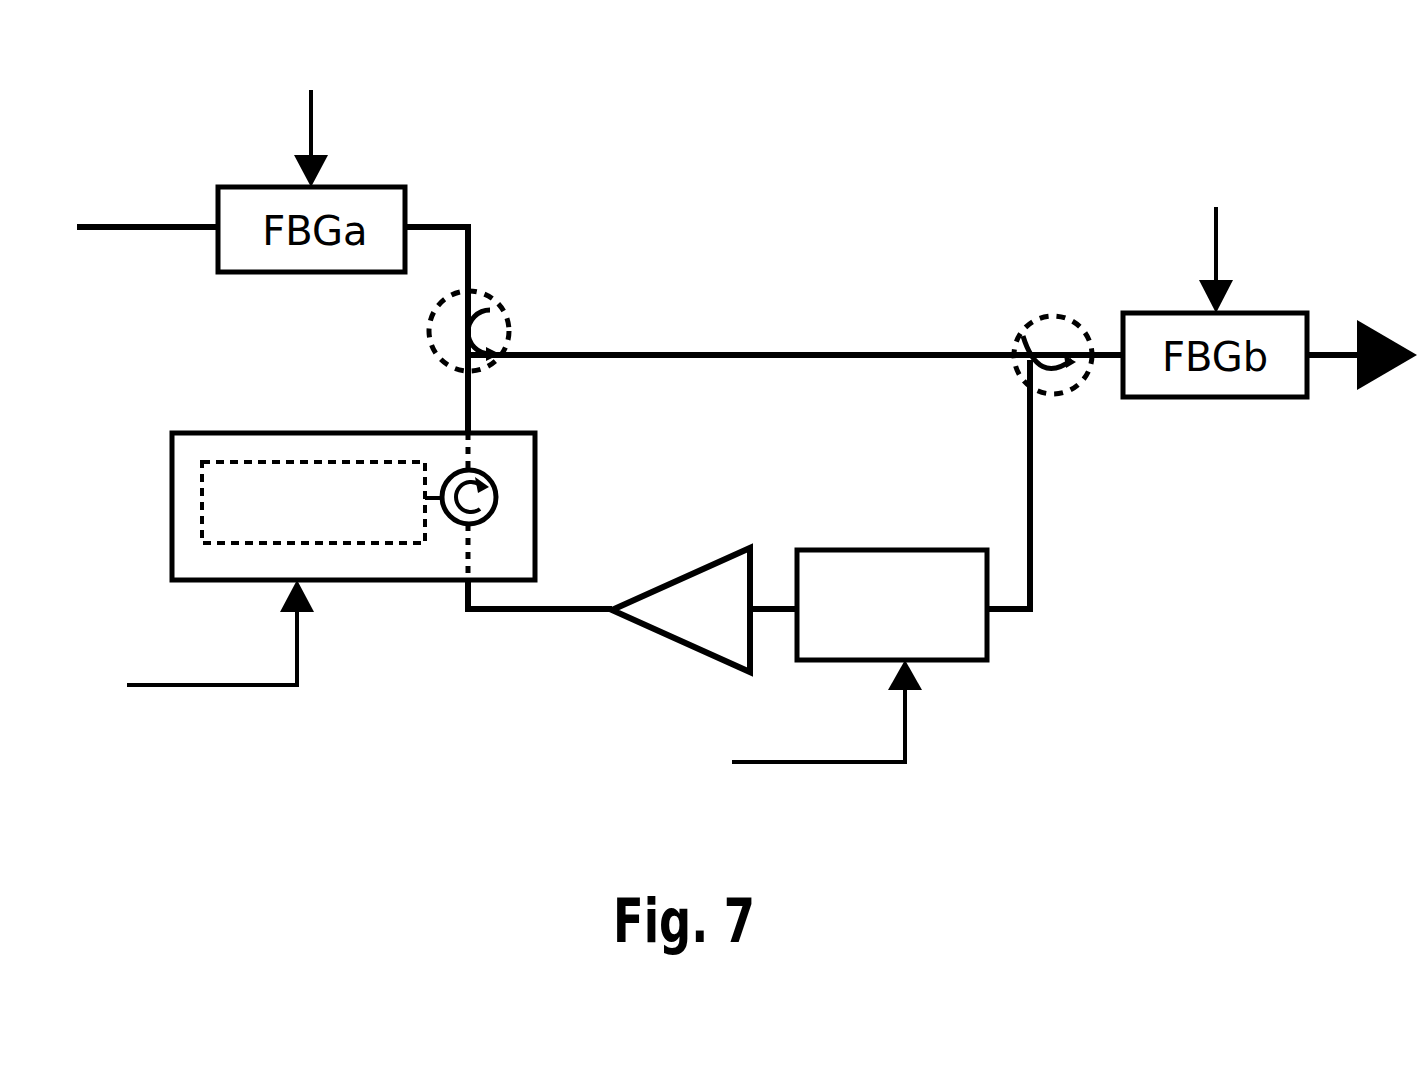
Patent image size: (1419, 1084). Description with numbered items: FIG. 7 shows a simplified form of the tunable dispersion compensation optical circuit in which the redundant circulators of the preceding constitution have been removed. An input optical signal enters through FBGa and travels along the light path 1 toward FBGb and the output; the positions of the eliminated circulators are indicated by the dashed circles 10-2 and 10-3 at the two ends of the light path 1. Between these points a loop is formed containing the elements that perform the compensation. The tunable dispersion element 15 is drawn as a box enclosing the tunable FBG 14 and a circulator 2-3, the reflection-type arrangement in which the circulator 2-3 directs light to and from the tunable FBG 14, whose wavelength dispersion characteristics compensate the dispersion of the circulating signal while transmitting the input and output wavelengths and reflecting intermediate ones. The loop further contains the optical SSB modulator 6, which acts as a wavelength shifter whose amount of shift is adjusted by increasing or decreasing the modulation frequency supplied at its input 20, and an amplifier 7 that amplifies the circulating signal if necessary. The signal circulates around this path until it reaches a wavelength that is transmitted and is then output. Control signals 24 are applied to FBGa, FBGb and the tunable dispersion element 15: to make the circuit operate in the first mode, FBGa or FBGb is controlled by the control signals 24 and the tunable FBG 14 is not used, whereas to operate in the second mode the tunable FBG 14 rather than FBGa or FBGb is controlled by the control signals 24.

The optical fiber transmission line 1 is at (712, 358).
The circulator 2-3 is at (490, 480).
The optical SSB modulator 6 is at (900, 550).
The amplifier 7 is at (683, 577).
The optical circulator 10-2 is at (480, 296).
The optical circulator 10-3 is at (1033, 330).
The tunable FBG 14 is at (348, 543).
The tunable dispersion element 15 is at (168, 472).
The modulation signal input 20 is at (793, 724).
The control signals 24 is at (684, 366).